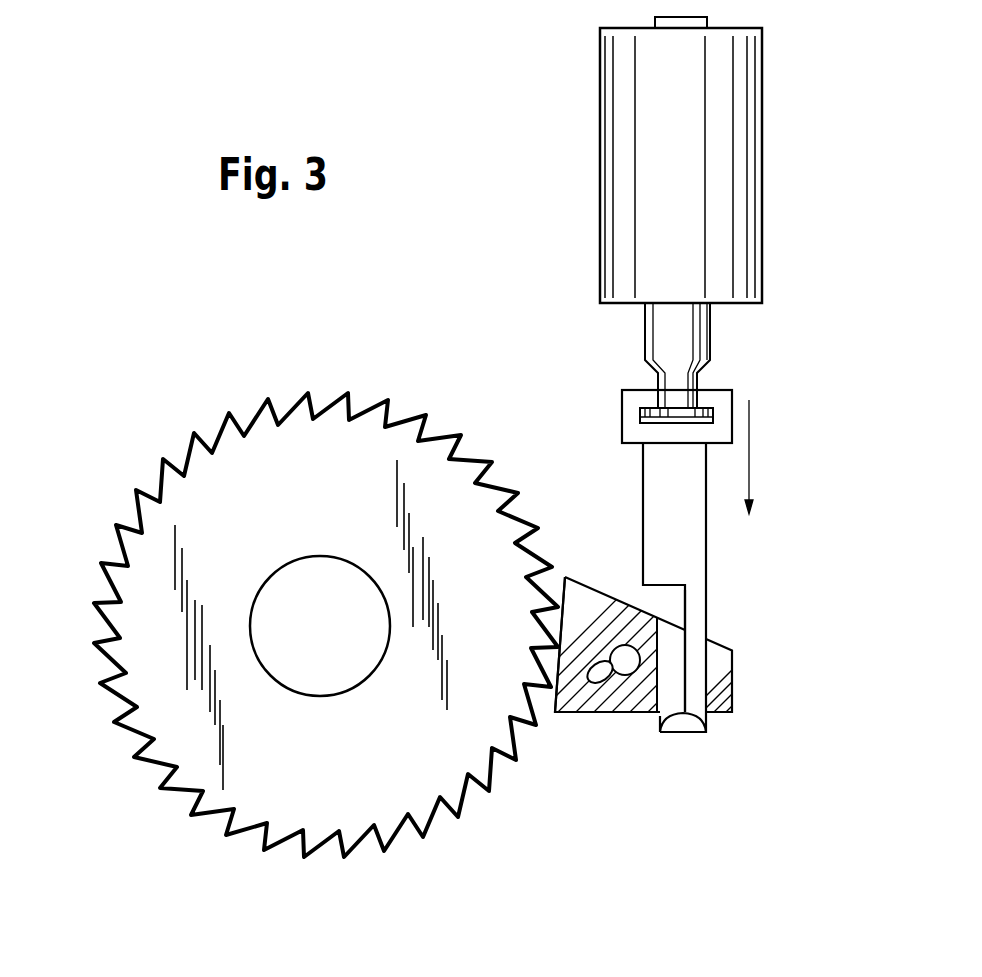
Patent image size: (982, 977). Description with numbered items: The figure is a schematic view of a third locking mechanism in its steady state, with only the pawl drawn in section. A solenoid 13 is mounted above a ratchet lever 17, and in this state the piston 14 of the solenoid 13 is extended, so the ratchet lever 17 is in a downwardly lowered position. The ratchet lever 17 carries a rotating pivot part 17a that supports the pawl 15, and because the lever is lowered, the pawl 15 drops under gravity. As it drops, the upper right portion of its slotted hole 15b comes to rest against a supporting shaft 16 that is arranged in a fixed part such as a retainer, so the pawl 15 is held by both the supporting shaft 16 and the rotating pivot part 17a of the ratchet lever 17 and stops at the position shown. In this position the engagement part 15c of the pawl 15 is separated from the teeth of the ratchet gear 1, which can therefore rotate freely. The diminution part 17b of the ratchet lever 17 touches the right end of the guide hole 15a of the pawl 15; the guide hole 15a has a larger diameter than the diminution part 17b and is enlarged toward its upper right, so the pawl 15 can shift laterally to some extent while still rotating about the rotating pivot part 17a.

The ratchet gear 1 is at (447, 440).
The solenoid 13 is at (760, 250).
The piston 14 is at (710, 330).
The pawl 15 is at (733, 683).
The guide hole 15a is at (667, 685).
The slotted hole 15b is at (600, 685).
The engagement part 15c is at (563, 575).
The supporting shaft 16 is at (623, 668).
The ratchet lever 17 is at (683, 525).
The rotating pivot part 17a is at (687, 728).
The diminution part 17b is at (692, 603).